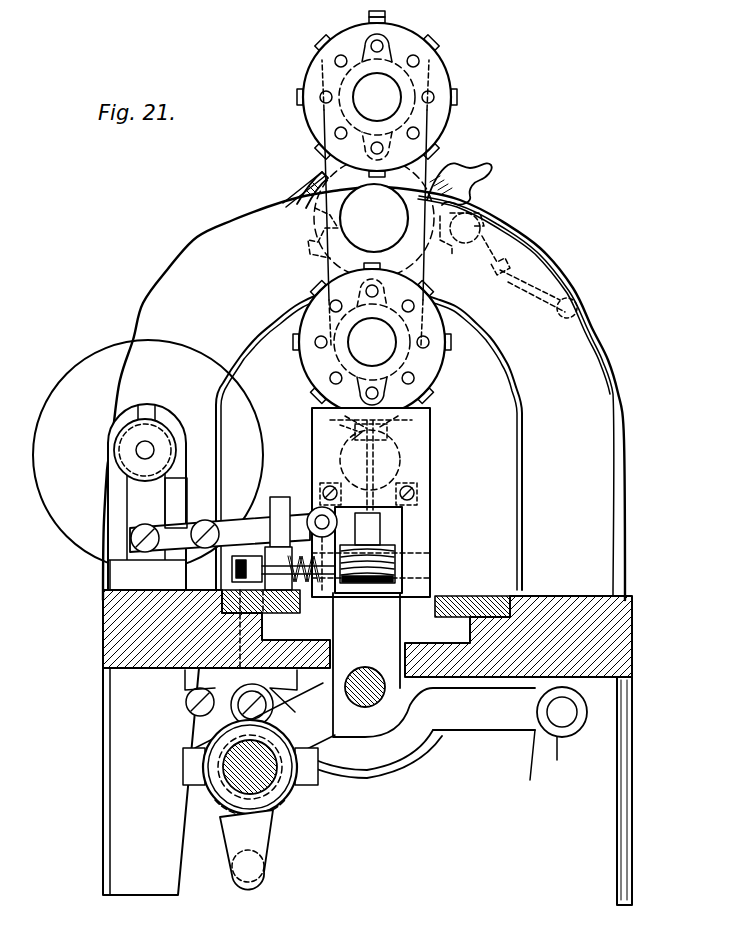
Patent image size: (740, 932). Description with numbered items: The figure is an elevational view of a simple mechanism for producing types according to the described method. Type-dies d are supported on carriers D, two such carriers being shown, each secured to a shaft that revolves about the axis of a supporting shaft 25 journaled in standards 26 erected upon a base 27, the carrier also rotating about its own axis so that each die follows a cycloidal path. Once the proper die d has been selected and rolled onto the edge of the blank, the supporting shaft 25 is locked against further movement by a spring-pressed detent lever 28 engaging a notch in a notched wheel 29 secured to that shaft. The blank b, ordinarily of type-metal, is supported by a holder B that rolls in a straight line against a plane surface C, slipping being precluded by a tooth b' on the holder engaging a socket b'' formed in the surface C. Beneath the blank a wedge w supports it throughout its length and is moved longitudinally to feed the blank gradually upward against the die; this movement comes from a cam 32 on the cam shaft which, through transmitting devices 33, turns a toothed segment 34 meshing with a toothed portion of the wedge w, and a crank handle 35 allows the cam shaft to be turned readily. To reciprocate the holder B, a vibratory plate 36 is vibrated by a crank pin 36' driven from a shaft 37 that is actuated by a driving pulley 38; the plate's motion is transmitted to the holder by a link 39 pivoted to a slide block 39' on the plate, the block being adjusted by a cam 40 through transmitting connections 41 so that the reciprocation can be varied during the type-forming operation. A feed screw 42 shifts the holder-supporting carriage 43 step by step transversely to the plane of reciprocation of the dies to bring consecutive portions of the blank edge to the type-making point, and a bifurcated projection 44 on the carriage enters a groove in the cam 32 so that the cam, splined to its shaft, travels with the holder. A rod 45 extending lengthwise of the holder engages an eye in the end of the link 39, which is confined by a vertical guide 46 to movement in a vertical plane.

The supporting shaft 25 is at (374, 218).
The standards 26 is at (364, 386).
The base 27 is at (632, 637).
The spring-pressed detent lever 28 is at (483, 176).
The notched wheel 29 is at (300, 183).
The cam 32 is at (276, 820).
The transmitting devices 33 is at (298, 608).
The toothed segment 34 is at (374, 588).
The crank handle 35 is at (228, 846).
The vibratory plate 36 is at (163, 450).
The crank pin 36' is at (116, 451).
The shaft 37 is at (148, 406).
The driving pulley 38 is at (55, 492).
The link 39 is at (220, 528).
The slide block 39' is at (160, 503).
The cam 40 is at (254, 852).
The transmitting connections 41 is at (196, 693).
The feed screw 42 is at (365, 668).
The holder-supporting carriage 43 is at (385, 630).
The bifurcated projection 44 is at (268, 718).
The rod 45 is at (322, 560).
The vertical guide 46 is at (283, 504).
The carrier D is at (448, 74).
The type-die d is at (457, 100).
The plane surface C is at (408, 428).
The holder B is at (405, 525).
The blank b is at (377, 460).
The tooth b' is at (344, 422).
The socket b'' is at (341, 444).
The wedge w is at (367, 529).